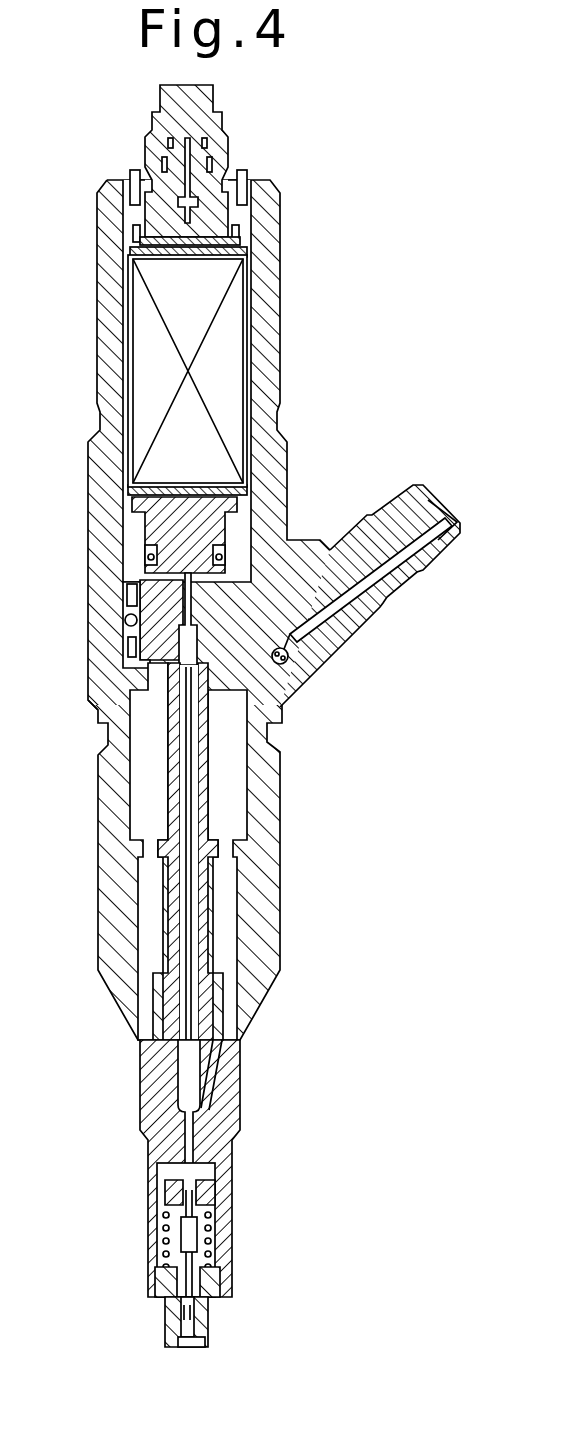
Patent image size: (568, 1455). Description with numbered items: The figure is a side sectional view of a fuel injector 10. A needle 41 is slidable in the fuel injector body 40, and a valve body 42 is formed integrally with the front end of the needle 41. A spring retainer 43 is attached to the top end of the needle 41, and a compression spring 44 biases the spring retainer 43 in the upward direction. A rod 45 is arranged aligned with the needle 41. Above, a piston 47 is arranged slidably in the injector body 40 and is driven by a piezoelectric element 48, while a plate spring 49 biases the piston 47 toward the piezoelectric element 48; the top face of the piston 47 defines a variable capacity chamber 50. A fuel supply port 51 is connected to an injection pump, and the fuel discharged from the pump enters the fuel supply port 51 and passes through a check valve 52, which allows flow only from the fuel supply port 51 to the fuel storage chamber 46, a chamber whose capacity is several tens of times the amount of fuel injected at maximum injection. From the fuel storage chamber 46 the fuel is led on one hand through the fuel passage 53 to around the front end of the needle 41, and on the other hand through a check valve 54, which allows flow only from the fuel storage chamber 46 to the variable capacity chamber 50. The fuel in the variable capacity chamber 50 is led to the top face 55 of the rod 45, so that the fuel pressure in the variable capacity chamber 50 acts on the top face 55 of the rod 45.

The fuel injector 10 is at (303, 228).
The fuel injector body 40 is at (268, 918).
The needle 41 is at (163, 1287).
The valve body 42 is at (175, 1348).
The spring retainer 43 is at (212, 1190).
The compression spring 44 is at (210, 1245).
The rod 45 is at (190, 1068).
The fuel storage chamber 46 is at (228, 805).
The piston 47 is at (213, 508).
The piezoelectric element 48 is at (228, 378).
The plate spring 49 is at (160, 500).
The variable capacity chamber 50 is at (160, 530).
The fuel supply port 51 is at (437, 512).
The check valve 52 is at (288, 663).
The fuel passage 53 is at (207, 1100).
The check valve 54 is at (132, 625).
The top face of the rod 55 is at (90, 702).